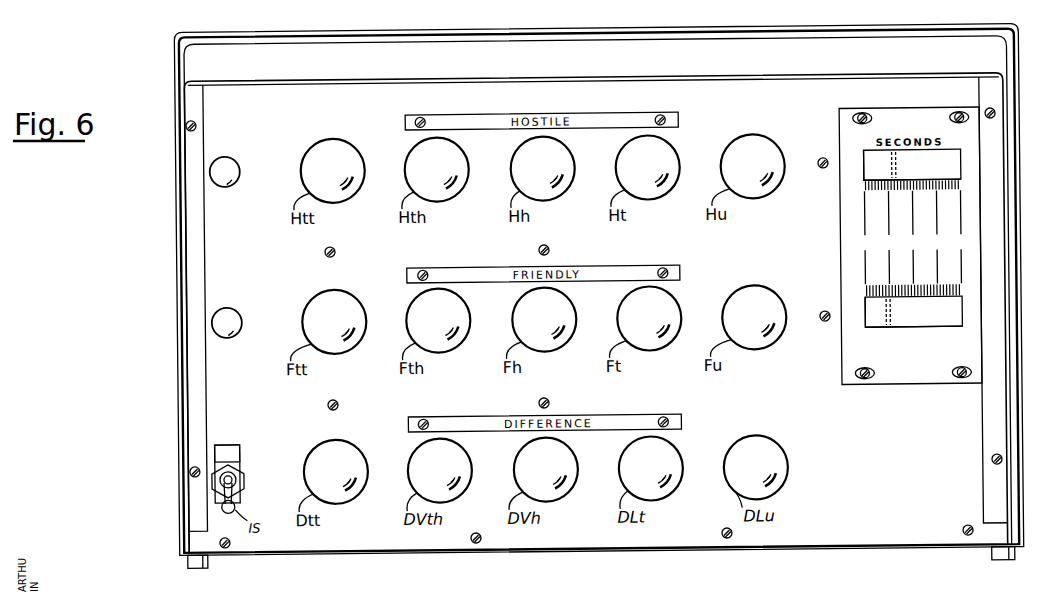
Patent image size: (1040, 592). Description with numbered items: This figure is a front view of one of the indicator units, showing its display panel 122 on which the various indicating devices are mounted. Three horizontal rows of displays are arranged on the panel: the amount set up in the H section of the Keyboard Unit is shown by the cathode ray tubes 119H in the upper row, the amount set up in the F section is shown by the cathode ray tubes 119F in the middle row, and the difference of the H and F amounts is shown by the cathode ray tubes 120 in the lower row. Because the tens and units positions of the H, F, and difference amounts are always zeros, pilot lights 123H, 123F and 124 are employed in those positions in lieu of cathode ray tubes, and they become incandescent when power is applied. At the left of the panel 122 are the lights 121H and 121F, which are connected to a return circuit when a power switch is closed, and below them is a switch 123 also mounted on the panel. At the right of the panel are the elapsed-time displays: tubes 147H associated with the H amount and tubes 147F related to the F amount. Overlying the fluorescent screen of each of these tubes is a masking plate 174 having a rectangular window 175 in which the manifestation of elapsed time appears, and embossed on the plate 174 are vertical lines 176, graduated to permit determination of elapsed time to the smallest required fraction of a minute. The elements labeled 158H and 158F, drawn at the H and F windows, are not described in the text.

The cathode ray tubes 119H is at (437, 169).
The cathode ray tubes 119F is at (439, 320).
The cathode ray tubes 120 is at (441, 470).
The light 121H is at (232, 156).
The light 121F is at (232, 305).
The display panel 122 is at (651, 550).
The switch 123 is at (240, 464).
The pilot light 123H is at (700, 167).
The pilot light 123F is at (702, 318).
The pilot light 124 is at (704, 468).
The cathode ray tubes 147H is at (912, 164).
The cathode ray tubes 147F is at (913, 311).
The hostile indicator slide 158H is at (865, 159).
The friendly indicator slide 158F is at (866, 328).
The masking plate 174 is at (851, 244).
The rectangular window 175 is at (866, 175).
The vertical lines 176 is at (967, 180).